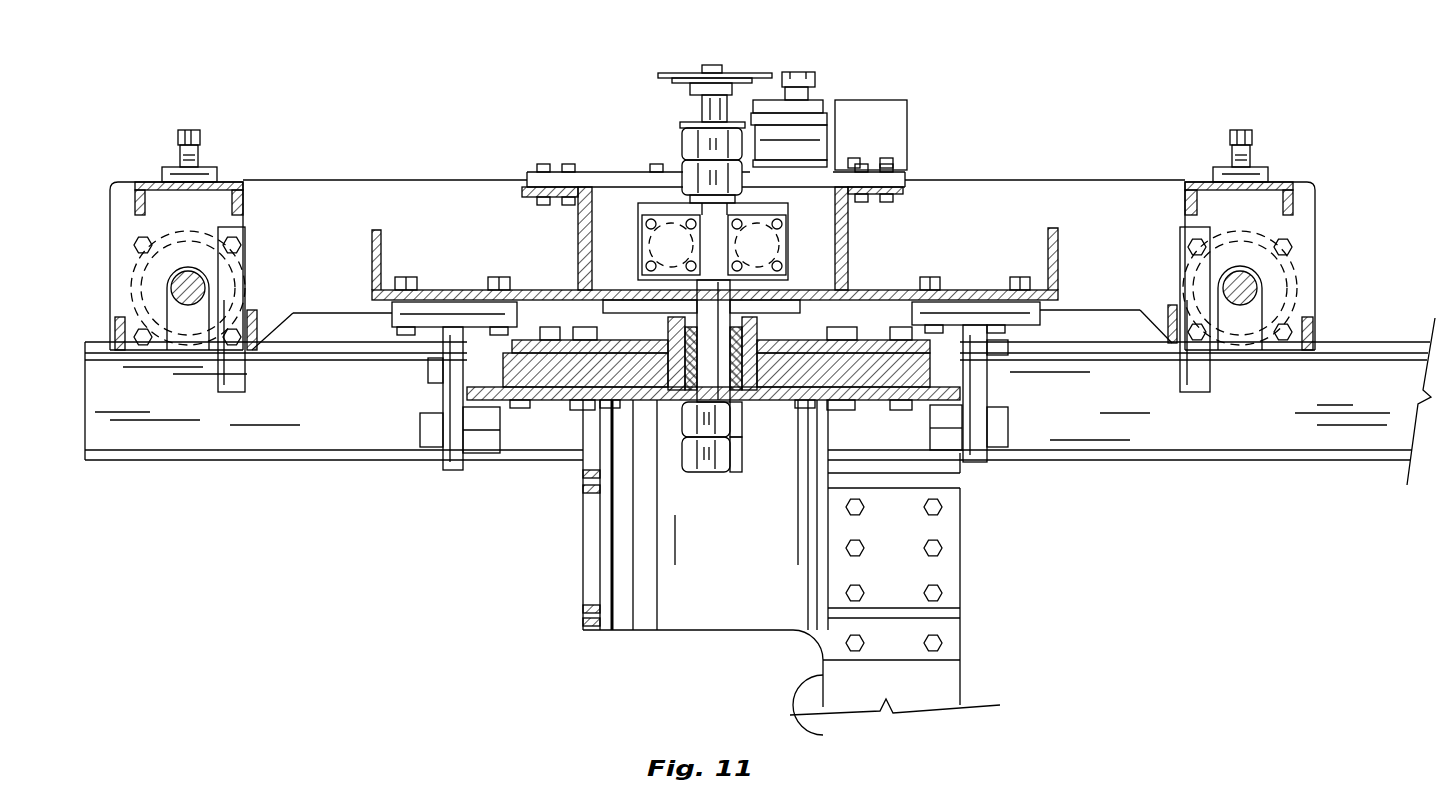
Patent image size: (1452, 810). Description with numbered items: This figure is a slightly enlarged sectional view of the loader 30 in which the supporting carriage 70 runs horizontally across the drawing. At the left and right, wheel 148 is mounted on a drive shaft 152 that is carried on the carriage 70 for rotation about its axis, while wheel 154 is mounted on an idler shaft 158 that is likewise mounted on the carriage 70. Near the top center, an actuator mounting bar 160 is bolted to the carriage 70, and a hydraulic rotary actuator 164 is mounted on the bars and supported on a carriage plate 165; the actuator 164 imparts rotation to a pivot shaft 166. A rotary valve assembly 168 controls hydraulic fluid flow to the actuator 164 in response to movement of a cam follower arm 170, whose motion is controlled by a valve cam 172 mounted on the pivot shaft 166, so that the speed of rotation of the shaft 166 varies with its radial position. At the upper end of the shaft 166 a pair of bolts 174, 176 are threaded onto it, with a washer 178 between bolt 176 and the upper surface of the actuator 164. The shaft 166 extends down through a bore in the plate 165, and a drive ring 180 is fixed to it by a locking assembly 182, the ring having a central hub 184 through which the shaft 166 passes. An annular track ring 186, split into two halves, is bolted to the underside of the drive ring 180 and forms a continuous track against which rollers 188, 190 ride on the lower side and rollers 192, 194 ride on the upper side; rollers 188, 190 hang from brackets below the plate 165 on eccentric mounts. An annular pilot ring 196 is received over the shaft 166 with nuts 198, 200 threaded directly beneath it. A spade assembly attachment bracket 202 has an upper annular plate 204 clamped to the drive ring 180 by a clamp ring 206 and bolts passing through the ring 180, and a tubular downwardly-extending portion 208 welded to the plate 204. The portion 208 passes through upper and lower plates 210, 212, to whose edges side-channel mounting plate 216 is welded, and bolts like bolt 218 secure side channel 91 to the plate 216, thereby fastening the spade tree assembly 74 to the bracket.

The loader 30 is at (1047, 578).
The carriage 70 is at (1101, 180).
The spade tree assembly 74 is at (823, 735).
The side channel 91 is at (955, 694).
The wheel 148 is at (1295, 257).
The drive shaft 152 is at (1263, 300).
The wheel 154 is at (248, 240).
The idler shaft 158 is at (170, 297).
The actuator mounting bar 160 is at (540, 180).
The hydraulic rotary actuator 164 is at (660, 249).
The carriage plate 165 is at (452, 292).
The pivot shaft 166 is at (797, 292).
The rotary valve assembly 168 is at (873, 108).
The cam follower arm 170 is at (816, 84).
The valve cam 172 is at (750, 78).
The bolt 174 is at (702, 130).
The bolt 176 is at (690, 178).
The washer 178 is at (742, 200).
The drive ring 180 is at (568, 403).
The locking assembly 182 is at (665, 393).
The central hub 184 is at (620, 310).
The annular track ring 186 is at (932, 410).
The roller 188 is at (482, 455).
The roller 190 is at (943, 435).
The roller 192 is at (436, 385).
The roller 194 is at (988, 347).
The annular pilot ring 196 is at (680, 405).
The nut 198 is at (742, 410).
The nut 200 is at (738, 470).
The spade assembly attachment bracket 202 is at (605, 642).
The upper annular plate 204 is at (582, 403).
The clamp ring 206 is at (863, 338).
The tubular downwardly-extending portion 208 is at (727, 630).
The upper plate 210 is at (883, 494).
The lower plate 212 is at (955, 613).
The side-channel mounting plate 216 is at (955, 568).
The bolt 218 is at (942, 648).